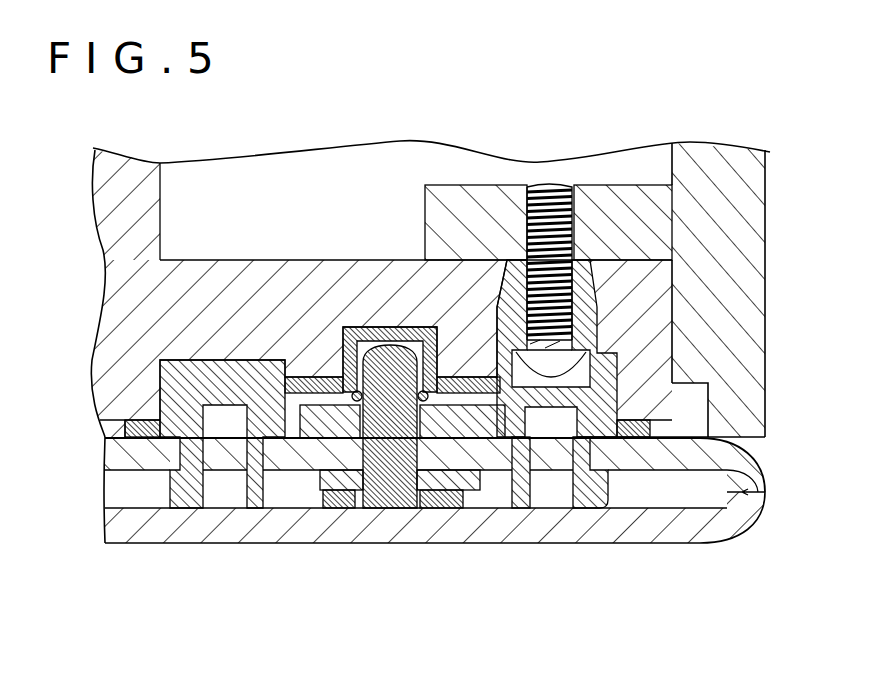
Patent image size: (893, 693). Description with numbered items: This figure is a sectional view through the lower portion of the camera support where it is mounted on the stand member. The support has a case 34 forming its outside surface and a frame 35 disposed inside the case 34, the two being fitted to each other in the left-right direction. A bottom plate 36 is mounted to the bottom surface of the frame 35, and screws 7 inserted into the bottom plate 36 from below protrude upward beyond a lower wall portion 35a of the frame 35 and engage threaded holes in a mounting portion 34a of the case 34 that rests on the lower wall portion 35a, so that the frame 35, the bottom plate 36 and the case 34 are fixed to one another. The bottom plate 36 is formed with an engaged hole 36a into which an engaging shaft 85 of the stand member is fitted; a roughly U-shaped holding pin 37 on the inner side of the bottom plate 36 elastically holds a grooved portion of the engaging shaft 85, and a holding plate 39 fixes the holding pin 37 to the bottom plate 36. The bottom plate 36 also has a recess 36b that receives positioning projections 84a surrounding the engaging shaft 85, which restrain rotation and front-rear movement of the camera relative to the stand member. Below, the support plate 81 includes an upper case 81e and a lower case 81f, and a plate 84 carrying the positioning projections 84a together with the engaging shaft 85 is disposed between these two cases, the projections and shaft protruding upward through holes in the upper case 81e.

The screw 7 is at (598, 185).
The case 34 is at (766, 252).
The mounting portion 34a is at (462, 185).
The frame 35 is at (110, 250).
The lower wall portion 35a is at (190, 280).
The bottom plate 36 is at (325, 480).
The engaged hole 36a is at (383, 430).
The recess 36b is at (247, 385).
The holding pin 37 is at (357, 392).
The holding plate 39 is at (378, 333).
The support plate 81 is at (600, 548).
The upper case 81e is at (123, 462).
The lower case 81f is at (180, 525).
The plate 84 is at (265, 500).
The positioning projection 84a is at (190, 440).
The engaging shaft 85 is at (425, 490).